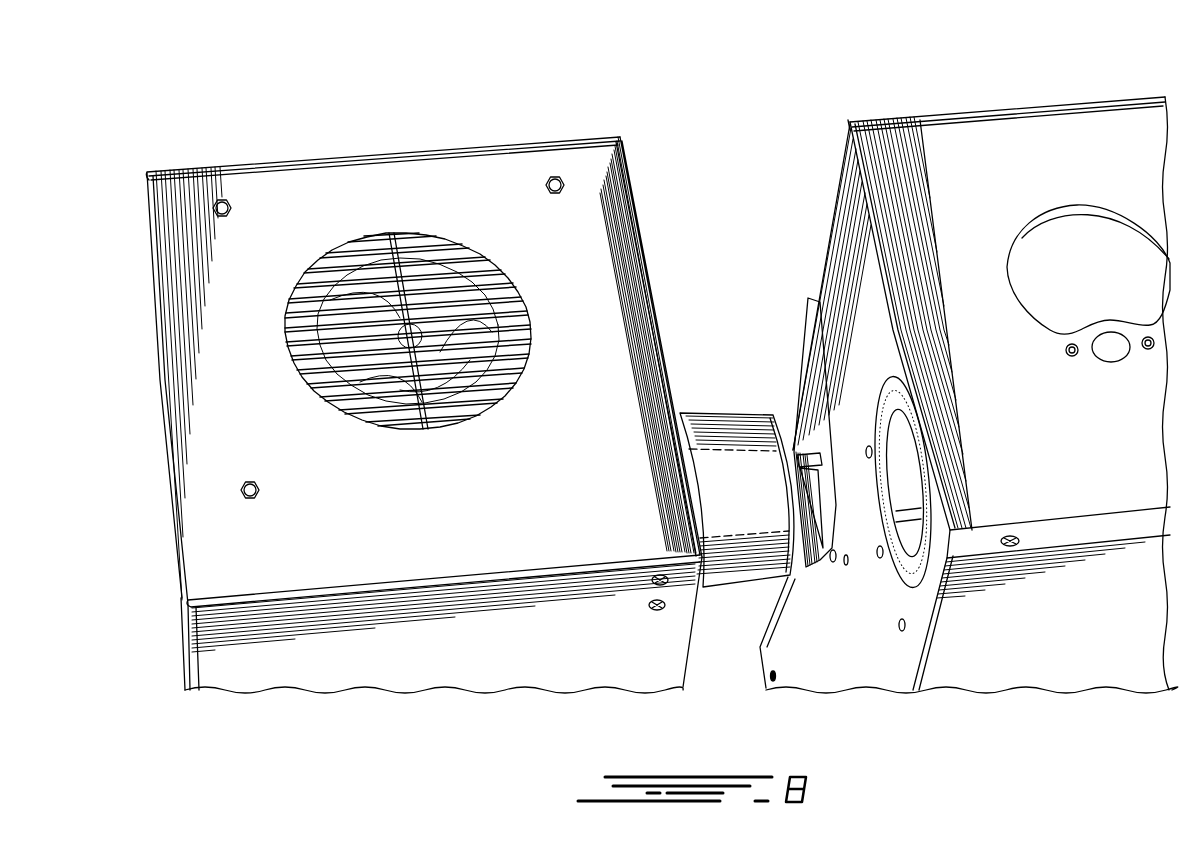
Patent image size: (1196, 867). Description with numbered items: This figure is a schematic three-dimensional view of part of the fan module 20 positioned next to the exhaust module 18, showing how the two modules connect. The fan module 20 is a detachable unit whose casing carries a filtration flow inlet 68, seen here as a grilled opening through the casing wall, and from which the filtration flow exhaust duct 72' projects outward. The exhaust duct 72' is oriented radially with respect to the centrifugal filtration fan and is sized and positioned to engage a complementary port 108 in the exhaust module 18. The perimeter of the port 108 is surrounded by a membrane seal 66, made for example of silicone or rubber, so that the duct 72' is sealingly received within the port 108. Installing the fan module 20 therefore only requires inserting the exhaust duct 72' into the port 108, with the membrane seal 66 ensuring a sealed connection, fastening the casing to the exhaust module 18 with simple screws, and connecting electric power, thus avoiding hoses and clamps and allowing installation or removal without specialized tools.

The exhaust module 18 is at (975, 172).
The fan module 20 is at (424, 370).
The membrane seal 66 is at (892, 388).
The filtration flow inlet 68 is at (366, 318).
The filtration flow exhaust duct 72' is at (737, 382).
The complementary port 108 is at (907, 470).